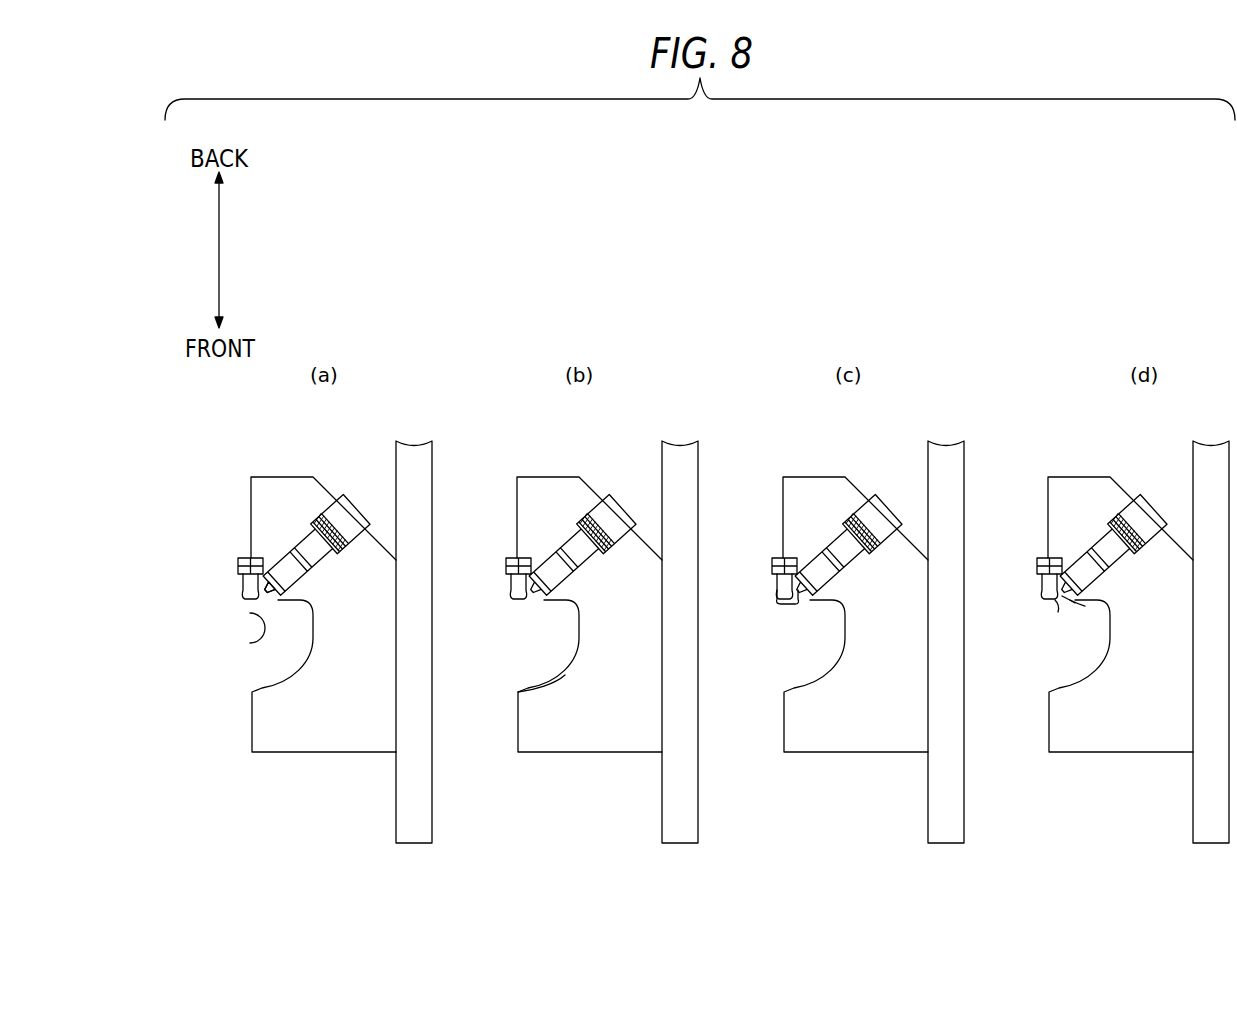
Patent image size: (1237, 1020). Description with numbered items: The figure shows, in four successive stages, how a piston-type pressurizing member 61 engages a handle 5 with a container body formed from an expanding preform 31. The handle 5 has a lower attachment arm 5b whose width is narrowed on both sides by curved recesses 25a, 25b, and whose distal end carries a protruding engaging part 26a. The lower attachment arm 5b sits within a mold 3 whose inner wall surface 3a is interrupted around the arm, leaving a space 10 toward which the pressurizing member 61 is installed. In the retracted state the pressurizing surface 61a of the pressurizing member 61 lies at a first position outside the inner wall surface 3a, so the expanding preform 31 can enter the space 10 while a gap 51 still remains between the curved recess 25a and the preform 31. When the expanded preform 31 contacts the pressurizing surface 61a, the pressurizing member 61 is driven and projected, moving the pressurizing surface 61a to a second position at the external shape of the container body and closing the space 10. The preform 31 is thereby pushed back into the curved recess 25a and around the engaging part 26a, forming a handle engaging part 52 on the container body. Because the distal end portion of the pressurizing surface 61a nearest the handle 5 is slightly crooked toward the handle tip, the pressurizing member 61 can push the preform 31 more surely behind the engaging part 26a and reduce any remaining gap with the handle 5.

The blow mold 3 is at (687, 623).
The inner wall surface 3a is at (250, 684).
The handle 5 is at (627, 531).
The lower attachment arm 5b is at (775, 582).
The space 10 is at (313, 638).
The curved recess 25a is at (505, 583).
The curved recess 25b is at (505, 593).
The engaging part 26a is at (1060, 610).
The preform 31 is at (258, 645).
The gap 51 is at (775, 590).
The handle engaging part 52 is at (1070, 607).
The pressurizing member 61 is at (287, 566).
The pressurizing surface 61a is at (268, 588).